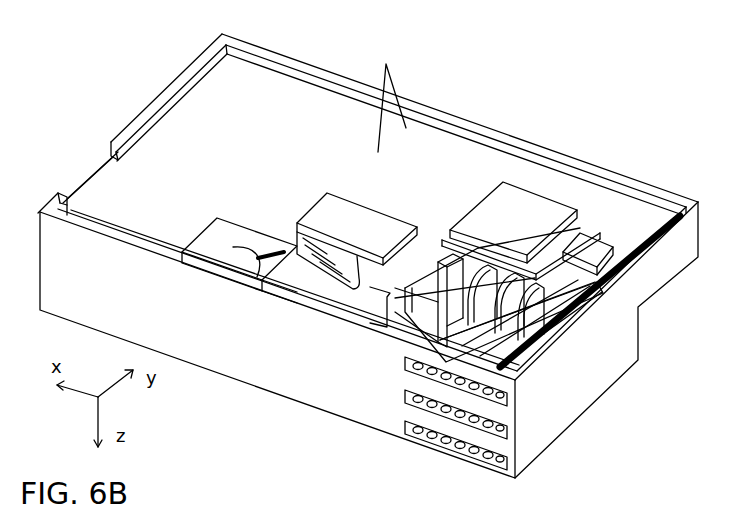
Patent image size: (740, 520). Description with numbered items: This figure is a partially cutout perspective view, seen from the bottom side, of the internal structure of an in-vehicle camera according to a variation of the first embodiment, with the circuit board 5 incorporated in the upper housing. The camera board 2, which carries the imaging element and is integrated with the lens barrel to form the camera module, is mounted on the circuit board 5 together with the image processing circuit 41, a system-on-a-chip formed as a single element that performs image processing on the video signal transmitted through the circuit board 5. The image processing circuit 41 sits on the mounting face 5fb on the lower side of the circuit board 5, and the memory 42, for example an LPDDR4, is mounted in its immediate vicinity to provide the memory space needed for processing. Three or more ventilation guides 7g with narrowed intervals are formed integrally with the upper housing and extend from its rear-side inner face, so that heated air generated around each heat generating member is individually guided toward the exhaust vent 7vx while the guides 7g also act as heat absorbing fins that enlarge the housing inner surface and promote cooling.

The camera board 2 is at (270, 277).
The circuit board 5 is at (288, 107).
The mounting face 5fb is at (406, 128).
The image processing circuit 41 is at (503, 203).
The memory 42 is at (592, 240).
The ventilation guides 7g is at (597, 290).
The exhaust vent 7vx is at (415, 430).